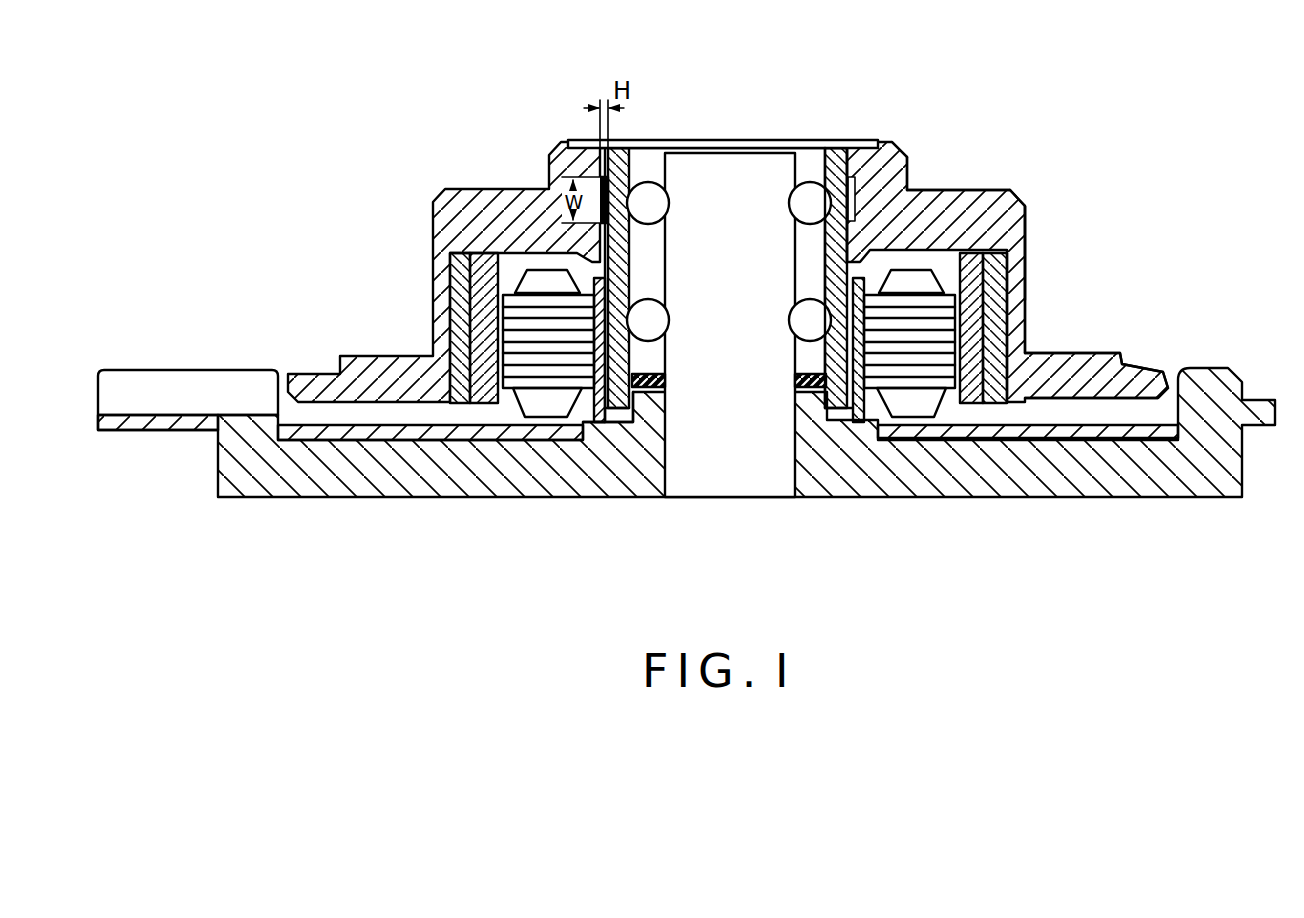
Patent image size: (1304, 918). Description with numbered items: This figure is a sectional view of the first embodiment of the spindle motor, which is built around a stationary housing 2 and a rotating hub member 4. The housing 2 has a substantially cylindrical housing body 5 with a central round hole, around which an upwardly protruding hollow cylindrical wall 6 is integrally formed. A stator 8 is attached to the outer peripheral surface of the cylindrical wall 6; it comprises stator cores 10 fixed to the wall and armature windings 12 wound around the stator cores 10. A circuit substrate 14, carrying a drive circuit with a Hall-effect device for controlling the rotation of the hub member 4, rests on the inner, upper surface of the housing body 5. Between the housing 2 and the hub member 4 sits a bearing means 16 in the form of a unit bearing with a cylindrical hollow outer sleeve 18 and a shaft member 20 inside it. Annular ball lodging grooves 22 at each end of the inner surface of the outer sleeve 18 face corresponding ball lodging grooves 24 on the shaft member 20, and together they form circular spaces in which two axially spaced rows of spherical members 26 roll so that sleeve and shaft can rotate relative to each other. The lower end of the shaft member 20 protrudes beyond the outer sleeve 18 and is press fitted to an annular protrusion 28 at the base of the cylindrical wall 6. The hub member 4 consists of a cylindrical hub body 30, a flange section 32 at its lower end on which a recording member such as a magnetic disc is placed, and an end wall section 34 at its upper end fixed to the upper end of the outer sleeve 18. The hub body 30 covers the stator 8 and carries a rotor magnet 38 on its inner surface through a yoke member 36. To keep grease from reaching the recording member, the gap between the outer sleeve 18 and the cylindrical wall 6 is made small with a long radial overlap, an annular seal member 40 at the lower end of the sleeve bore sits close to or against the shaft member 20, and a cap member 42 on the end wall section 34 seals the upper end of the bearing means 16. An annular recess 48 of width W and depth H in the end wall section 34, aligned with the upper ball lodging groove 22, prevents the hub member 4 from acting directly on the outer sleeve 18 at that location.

The housing 2 is at (232, 512).
The hub member 4 is at (968, 185).
The housing body 5 is at (902, 490).
The cylindrical wall 6 is at (598, 366).
The stator 8 is at (456, 216).
The stator cores 10 is at (538, 383).
The armature windings 12 is at (510, 276).
The circuit substrate 14 is at (328, 430).
The bearing means 16 is at (861, 157).
The outer sleeve 18 is at (913, 188).
The shaft member 20 is at (735, 488).
The ball lodging grooves 22 is at (802, 186).
The ball lodging grooves 24 is at (809, 212).
The spherical members 26 is at (810, 304).
The annular protrusion 28 is at (622, 455).
The hub body 30 is at (1016, 300).
The flange section 32 is at (1075, 352).
The end wall section 34 is at (997, 202).
The yoke member 36 is at (1000, 385).
The rotor magnet 38 is at (972, 383).
The seal member 40 is at (652, 390).
The cap member 42 is at (677, 140).
The annular recess 48 is at (612, 185).